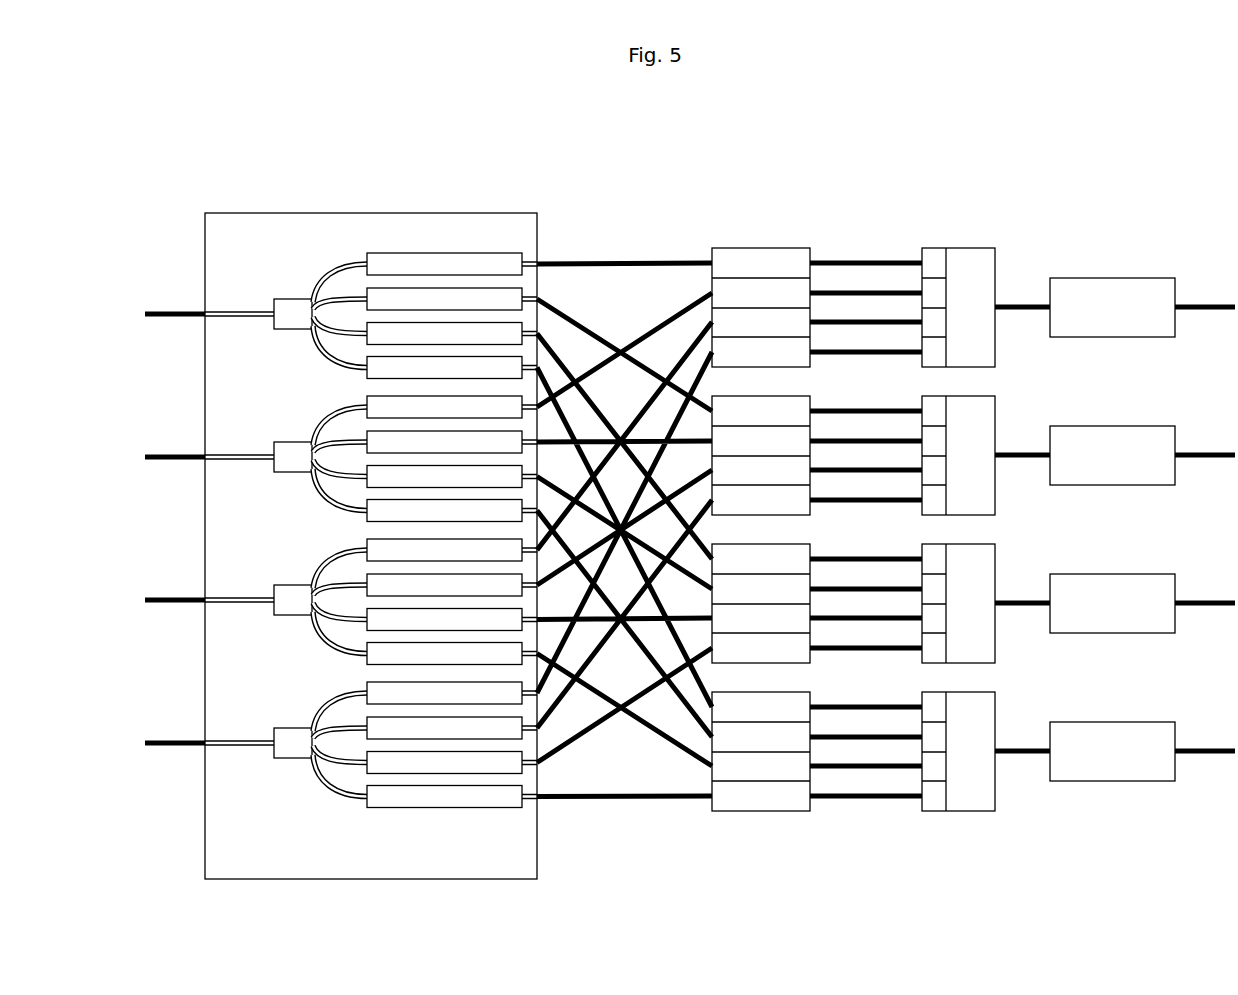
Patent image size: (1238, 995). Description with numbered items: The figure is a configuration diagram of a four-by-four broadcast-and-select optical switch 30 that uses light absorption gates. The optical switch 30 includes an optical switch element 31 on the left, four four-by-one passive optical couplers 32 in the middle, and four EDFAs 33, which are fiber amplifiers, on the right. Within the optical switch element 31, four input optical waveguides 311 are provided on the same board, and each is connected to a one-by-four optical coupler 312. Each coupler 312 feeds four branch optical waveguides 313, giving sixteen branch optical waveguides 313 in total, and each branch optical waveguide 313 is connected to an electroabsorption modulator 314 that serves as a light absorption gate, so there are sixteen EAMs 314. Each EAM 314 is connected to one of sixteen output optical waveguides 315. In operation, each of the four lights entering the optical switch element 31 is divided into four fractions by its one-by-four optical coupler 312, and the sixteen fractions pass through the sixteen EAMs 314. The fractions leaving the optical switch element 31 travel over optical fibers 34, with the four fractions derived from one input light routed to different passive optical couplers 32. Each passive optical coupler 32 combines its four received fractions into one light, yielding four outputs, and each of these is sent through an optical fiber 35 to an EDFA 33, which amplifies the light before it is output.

The optical switch 30 is at (800, 172).
The optical switch element 31 is at (452, 203).
The input optical waveguide 311 is at (215, 312).
The 1×4 optical coupler 312 is at (290, 322).
The branch optical waveguide 313 is at (315, 288).
The electroabsorption modulator 314 is at (433, 330).
The output optical waveguide 315 is at (540, 298).
The passive optical coupler 32 is at (864, 242).
The EDFA 33 is at (1150, 278).
The optical fiber 34 is at (590, 333).
The optical fiber 35 is at (1027, 305).